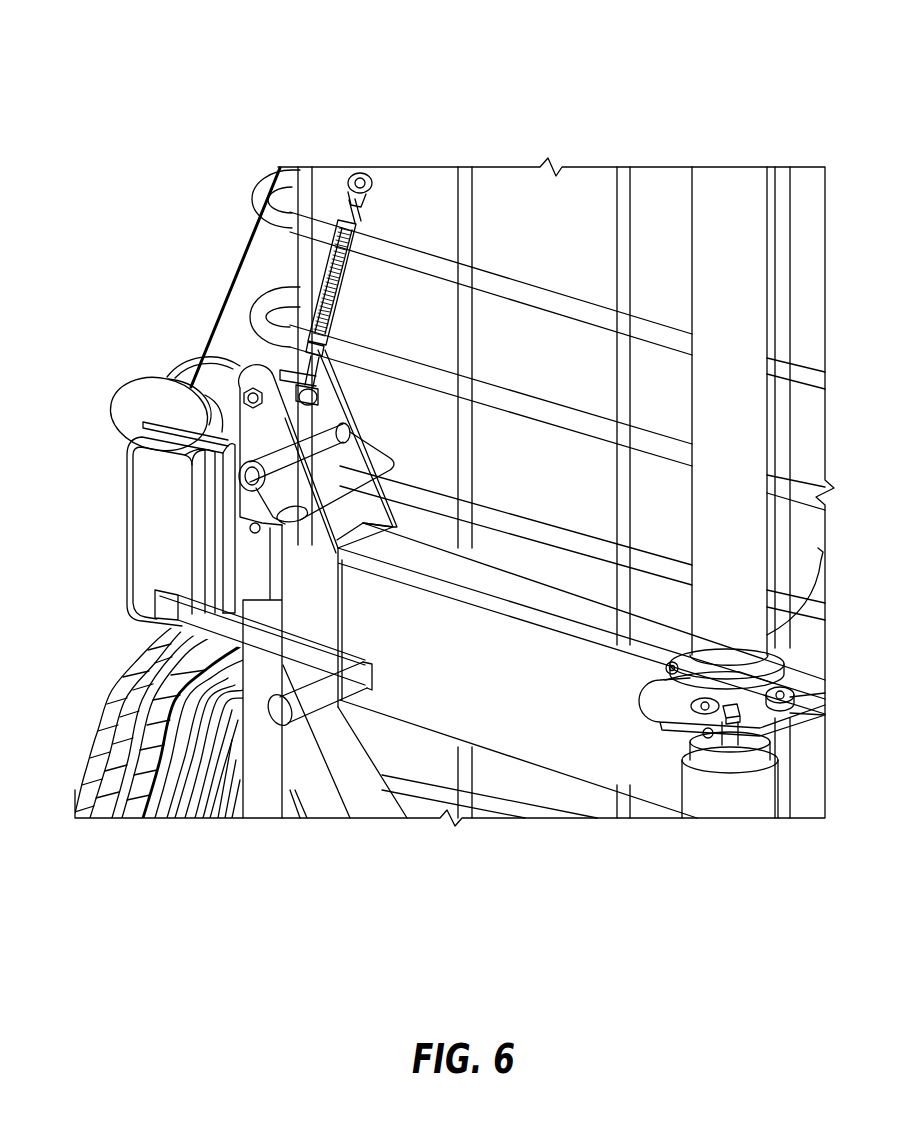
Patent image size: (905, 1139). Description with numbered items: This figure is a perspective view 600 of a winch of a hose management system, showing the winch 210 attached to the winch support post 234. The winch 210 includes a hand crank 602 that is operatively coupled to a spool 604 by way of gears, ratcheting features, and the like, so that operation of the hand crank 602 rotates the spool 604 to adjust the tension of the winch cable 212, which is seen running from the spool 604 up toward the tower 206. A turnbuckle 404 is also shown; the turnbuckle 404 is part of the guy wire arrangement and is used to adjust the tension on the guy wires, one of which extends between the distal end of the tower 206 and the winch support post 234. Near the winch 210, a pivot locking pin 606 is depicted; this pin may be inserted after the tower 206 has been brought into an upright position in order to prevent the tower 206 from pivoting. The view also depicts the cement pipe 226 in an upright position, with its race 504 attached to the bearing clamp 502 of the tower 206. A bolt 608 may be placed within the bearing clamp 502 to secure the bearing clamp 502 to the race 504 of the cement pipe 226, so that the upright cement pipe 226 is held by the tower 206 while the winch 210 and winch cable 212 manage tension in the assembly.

The perspective view 600 is at (196, 82).
The winch cable 212 is at (237, 278).
The turnbuckle 404 is at (340, 286).
The spool 604 is at (135, 400).
The pivot locking pin 606 is at (378, 455).
The winch 210 is at (118, 542).
The winch support post 234 is at (127, 683).
The hand crank 602 is at (318, 662).
The cement pipe 226 is at (717, 233).
The race 504 is at (673, 688).
The bearing clamp 502 is at (673, 702).
The tower 206 is at (781, 696).
The bolt 608 is at (747, 710).